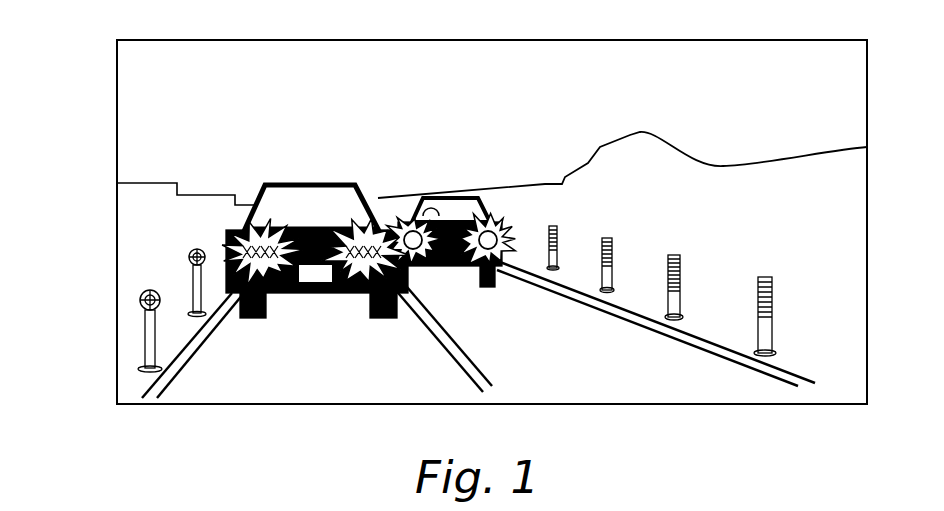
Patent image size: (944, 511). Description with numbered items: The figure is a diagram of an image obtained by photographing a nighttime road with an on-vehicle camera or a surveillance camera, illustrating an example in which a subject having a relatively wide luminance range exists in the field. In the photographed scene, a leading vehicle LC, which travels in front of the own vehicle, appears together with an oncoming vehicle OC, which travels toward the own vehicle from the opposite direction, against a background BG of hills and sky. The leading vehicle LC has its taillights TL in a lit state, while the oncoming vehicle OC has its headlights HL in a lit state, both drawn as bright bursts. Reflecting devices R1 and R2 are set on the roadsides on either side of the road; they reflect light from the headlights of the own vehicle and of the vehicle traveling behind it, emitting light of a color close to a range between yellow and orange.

The leading vehicle LC is at (318, 182).
The oncoming vehicle OC is at (455, 195).
The taillights TL is at (315, 300).
The headlights HL is at (471, 301).
The background BG is at (628, 162).
The reflecting device R1 is at (143, 347).
The reflecting device R2 is at (772, 335).